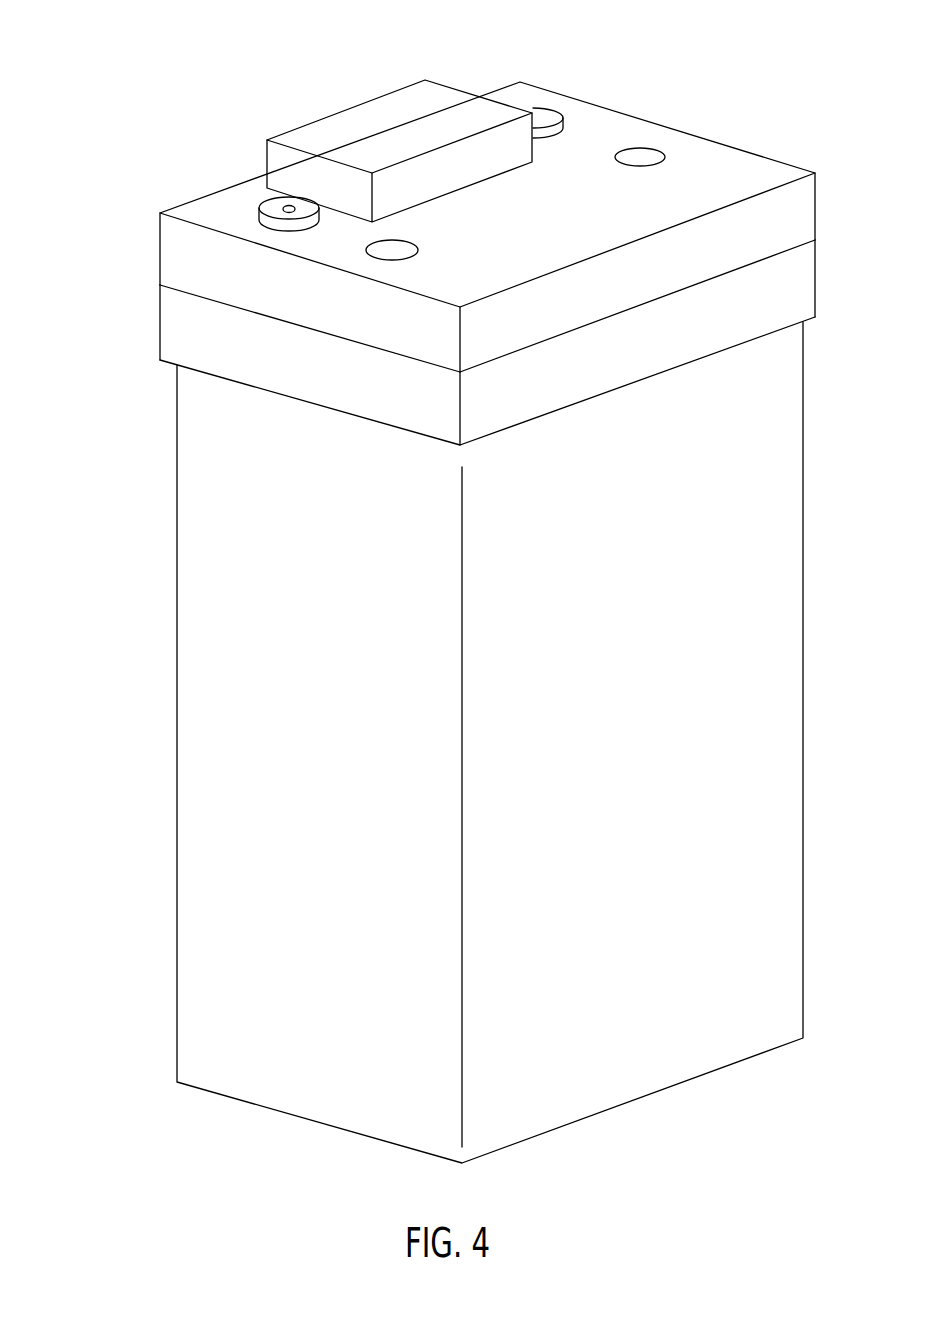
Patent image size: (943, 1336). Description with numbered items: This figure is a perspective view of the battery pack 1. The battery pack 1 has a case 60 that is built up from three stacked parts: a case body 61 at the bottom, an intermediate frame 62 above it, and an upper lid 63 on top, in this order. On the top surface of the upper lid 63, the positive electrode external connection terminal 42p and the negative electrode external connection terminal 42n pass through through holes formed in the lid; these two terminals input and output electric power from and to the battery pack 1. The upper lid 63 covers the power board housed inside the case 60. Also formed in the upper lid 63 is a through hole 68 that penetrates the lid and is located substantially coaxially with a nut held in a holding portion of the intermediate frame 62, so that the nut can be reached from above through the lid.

The battery pack 1 is at (208, 0).
The case 60 is at (88, 230).
The case body 61 is at (195, 482).
The intermediate frame 62 is at (178, 317).
The upper lid 63 is at (178, 257).
The negative electrode external connection terminal 42n is at (278, 206).
The positive electrode external connection terminal 42p is at (543, 110).
The through hole 68 is at (413, 243).